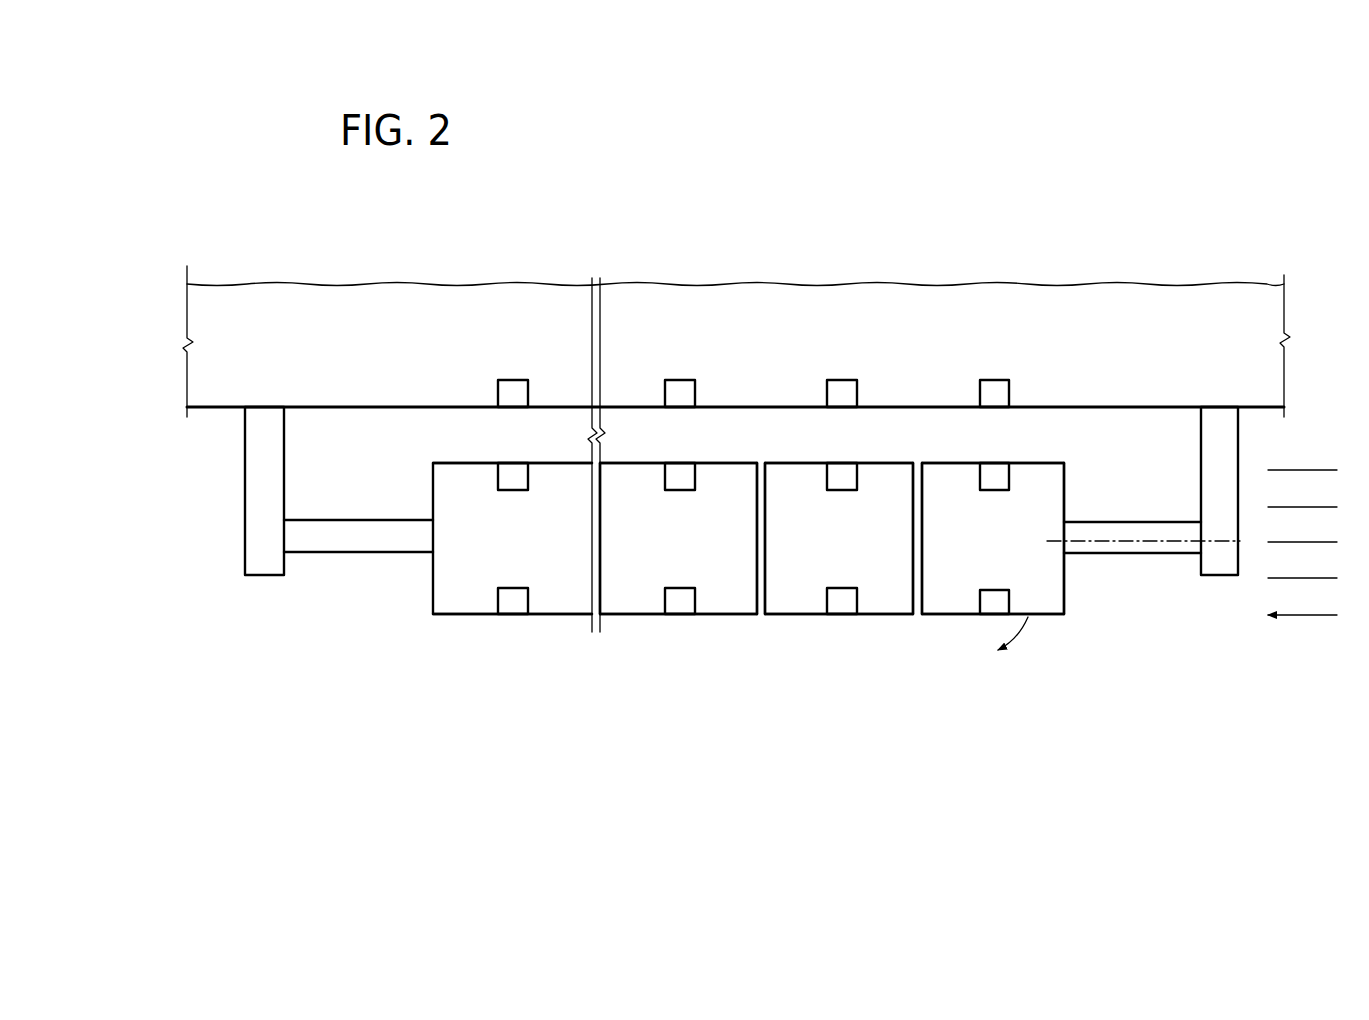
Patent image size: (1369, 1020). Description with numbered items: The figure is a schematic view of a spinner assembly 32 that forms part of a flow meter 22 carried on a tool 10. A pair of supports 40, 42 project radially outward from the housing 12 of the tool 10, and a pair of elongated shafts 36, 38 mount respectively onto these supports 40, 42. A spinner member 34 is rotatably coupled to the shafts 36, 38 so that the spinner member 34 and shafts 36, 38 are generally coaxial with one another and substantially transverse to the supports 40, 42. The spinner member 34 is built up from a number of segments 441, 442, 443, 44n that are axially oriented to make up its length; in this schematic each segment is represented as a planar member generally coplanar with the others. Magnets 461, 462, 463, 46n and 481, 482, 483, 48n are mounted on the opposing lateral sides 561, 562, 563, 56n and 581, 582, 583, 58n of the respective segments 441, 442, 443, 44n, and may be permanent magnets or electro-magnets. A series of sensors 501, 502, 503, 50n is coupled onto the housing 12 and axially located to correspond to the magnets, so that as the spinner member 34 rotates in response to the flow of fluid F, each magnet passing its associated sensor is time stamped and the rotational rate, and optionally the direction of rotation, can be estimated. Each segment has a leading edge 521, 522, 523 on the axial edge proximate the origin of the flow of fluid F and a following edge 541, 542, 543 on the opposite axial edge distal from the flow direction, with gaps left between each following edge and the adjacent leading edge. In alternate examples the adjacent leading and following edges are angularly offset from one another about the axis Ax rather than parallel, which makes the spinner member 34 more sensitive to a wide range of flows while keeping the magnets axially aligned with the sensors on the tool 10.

The tool 10 is at (249, 264).
The housing 12 is at (213, 410).
The flow meter 22 is at (139, 543).
The spinner assembly 32 is at (264, 628).
The spinner member 34 is at (513, 697).
The elongated shaft 36 is at (1160, 557).
The elongated shaft 38 is at (354, 553).
The support 40 is at (1223, 577).
The support 42 is at (245, 494).
The segment 44n is at (570, 597).
The segment 443 is at (735, 602).
The segment 442 is at (895, 602).
The segment 441 is at (1047, 603).
The magnet 46n is at (518, 491).
The magnet 463 is at (684, 491).
The magnet 462 is at (846, 491).
The magnet 461 is at (988, 491).
The magnet 48n is at (513, 587).
The magnet 483 is at (679, 587).
The magnet 482 is at (840, 587).
The magnet 481 is at (992, 589).
The sensor 50n is at (511, 378).
The sensor 503 is at (678, 378).
The sensor 502 is at (840, 378).
The sensor 501 is at (996, 378).
The leading edge 523 is at (753, 477).
The leading edge 522 is at (905, 477).
The leading edge 521 is at (1067, 593).
The following edge 543 is at (610, 477).
The following edge 542 is at (767, 480).
The following edge 541 is at (922, 483).
The lateral side 56n is at (472, 462).
The lateral side 563 is at (713, 462).
The lateral side 562 is at (878, 462).
The lateral side 561 is at (942, 590).
The lateral side 58n is at (475, 615).
The lateral side 583 is at (653, 617).
The lateral side 582 is at (807, 617).
The lateral side 581 is at (953, 615).
The axis Ax is at (1115, 540).
The fluid F is at (1310, 470).